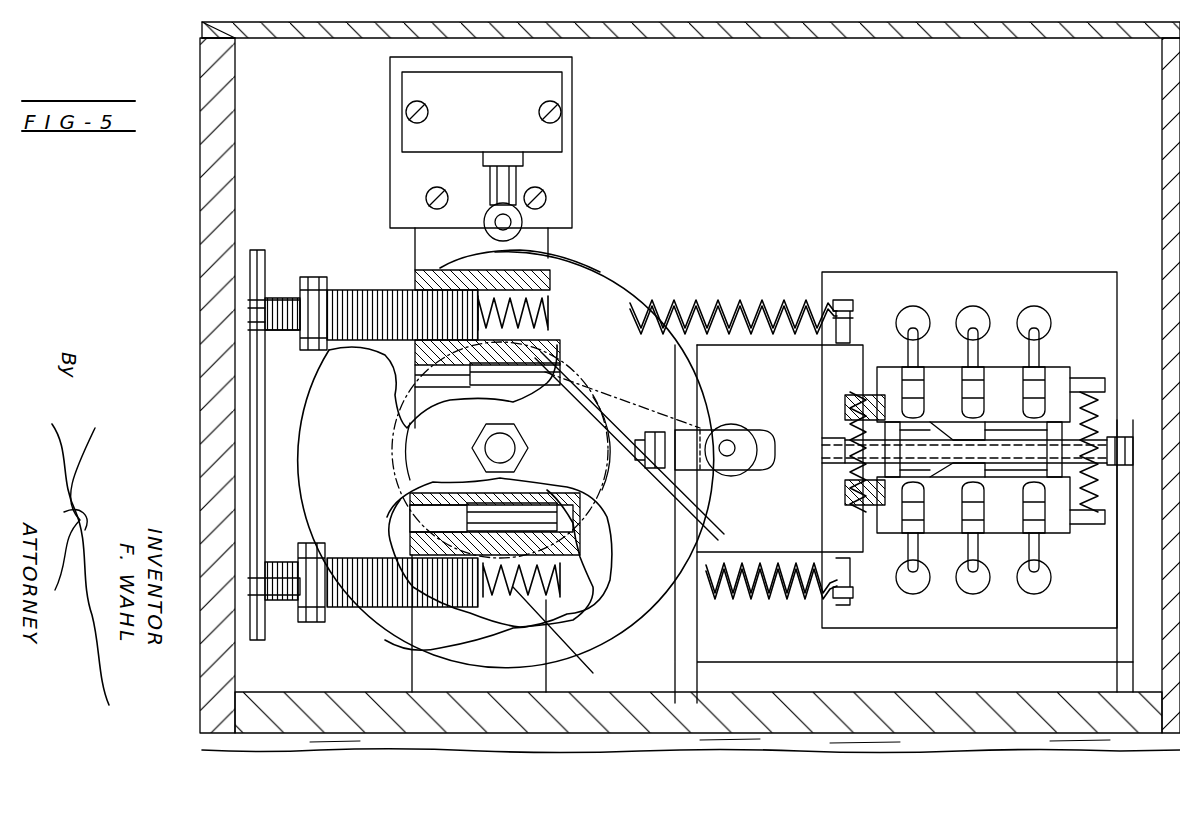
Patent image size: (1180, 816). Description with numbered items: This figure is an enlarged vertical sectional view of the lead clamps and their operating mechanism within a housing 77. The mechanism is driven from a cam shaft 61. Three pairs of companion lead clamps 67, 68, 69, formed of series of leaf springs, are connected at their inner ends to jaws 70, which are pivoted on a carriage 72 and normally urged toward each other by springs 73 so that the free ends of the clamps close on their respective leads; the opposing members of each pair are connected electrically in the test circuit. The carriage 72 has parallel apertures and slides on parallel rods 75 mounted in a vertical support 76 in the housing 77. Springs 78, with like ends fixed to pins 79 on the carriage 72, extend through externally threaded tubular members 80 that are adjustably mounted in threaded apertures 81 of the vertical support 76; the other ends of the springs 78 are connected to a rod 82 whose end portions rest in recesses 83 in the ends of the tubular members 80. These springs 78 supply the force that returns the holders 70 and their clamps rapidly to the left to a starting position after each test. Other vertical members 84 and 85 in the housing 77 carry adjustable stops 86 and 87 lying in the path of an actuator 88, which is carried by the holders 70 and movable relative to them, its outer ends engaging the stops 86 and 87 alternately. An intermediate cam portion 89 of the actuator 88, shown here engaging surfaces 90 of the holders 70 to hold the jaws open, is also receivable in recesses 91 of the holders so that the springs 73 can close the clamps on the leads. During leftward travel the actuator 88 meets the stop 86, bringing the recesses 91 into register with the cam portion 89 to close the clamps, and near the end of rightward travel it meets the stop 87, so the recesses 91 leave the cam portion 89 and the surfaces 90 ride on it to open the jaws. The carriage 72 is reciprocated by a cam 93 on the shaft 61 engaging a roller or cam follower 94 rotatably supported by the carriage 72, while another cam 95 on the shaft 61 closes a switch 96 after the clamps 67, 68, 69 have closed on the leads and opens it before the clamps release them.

The cam shaft 61 is at (488, 441).
The lead clamp 67 is at (991, 507).
The lead clamp 68 is at (931, 507).
The lead clamp 69 is at (1058, 538).
The jaws 70 is at (1002, 542).
The carriage 72 is at (870, 355).
The springs 73 is at (1105, 405).
The parallel rods 75 is at (677, 376).
The vertical support 76 is at (415, 252).
The housing 77 is at (235, 192).
The springs 78 is at (768, 614).
The pins 79 is at (834, 625).
The externally threaded tubular members 80 is at (352, 615).
The threaded apertures 81 is at (400, 597).
The rod 82 is at (265, 372).
The recesses 83 is at (270, 290).
The vertical member 84 is at (675, 635).
The vertical member 85 is at (1133, 638).
The adjustable stop 86 is at (645, 435).
The adjustable stop 87 is at (1125, 437).
The actuator 88 is at (828, 437).
The cam portion 89 is at (990, 432).
The surfaces 90 is at (925, 482).
The recesses 91 is at (980, 480).
The cam 93 is at (598, 390).
The cam follower 94 is at (726, 422).
The cam 95 is at (598, 276).
The switch 96 is at (493, 183).